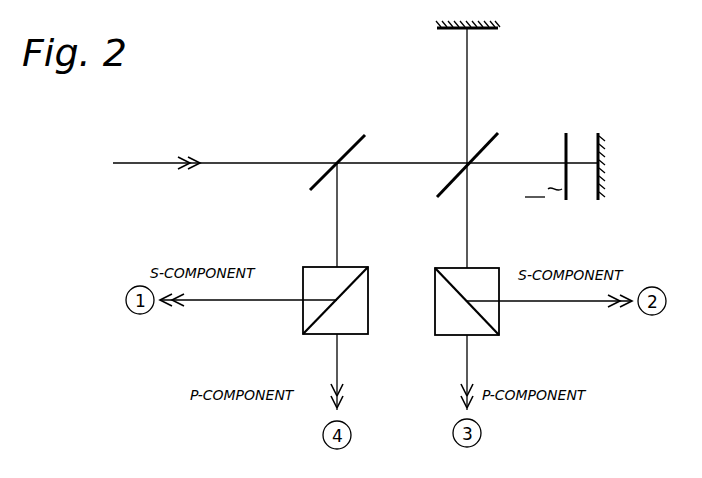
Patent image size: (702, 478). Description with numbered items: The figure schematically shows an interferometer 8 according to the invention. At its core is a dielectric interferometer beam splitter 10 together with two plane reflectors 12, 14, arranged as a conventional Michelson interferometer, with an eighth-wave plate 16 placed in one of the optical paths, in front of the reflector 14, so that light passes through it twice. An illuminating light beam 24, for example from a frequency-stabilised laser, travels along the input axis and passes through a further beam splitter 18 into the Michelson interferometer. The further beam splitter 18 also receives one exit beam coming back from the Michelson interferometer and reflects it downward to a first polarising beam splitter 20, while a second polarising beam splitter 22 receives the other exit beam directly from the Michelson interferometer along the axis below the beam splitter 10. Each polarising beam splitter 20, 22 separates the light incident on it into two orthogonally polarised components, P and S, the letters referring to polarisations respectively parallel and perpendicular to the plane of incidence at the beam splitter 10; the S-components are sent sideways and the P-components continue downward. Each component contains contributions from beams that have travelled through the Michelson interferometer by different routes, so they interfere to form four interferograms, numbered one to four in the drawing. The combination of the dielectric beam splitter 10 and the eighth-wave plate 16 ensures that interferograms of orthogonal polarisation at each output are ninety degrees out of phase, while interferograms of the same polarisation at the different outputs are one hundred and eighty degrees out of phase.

The interferometer 8 is at (573, 64).
The dielectric interferometer beam splitter 10 is at (500, 142).
The plane reflector 12 is at (497, 31).
The plane reflector 14 is at (598, 141).
The eighth-wave plate 16 is at (566, 141).
The further beam splitter 18 is at (356, 140).
The first polarising beam splitter 20 is at (303, 318).
The second polarising beam splitter 22 is at (435, 318).
The illuminating light beam 24 is at (150, 163).